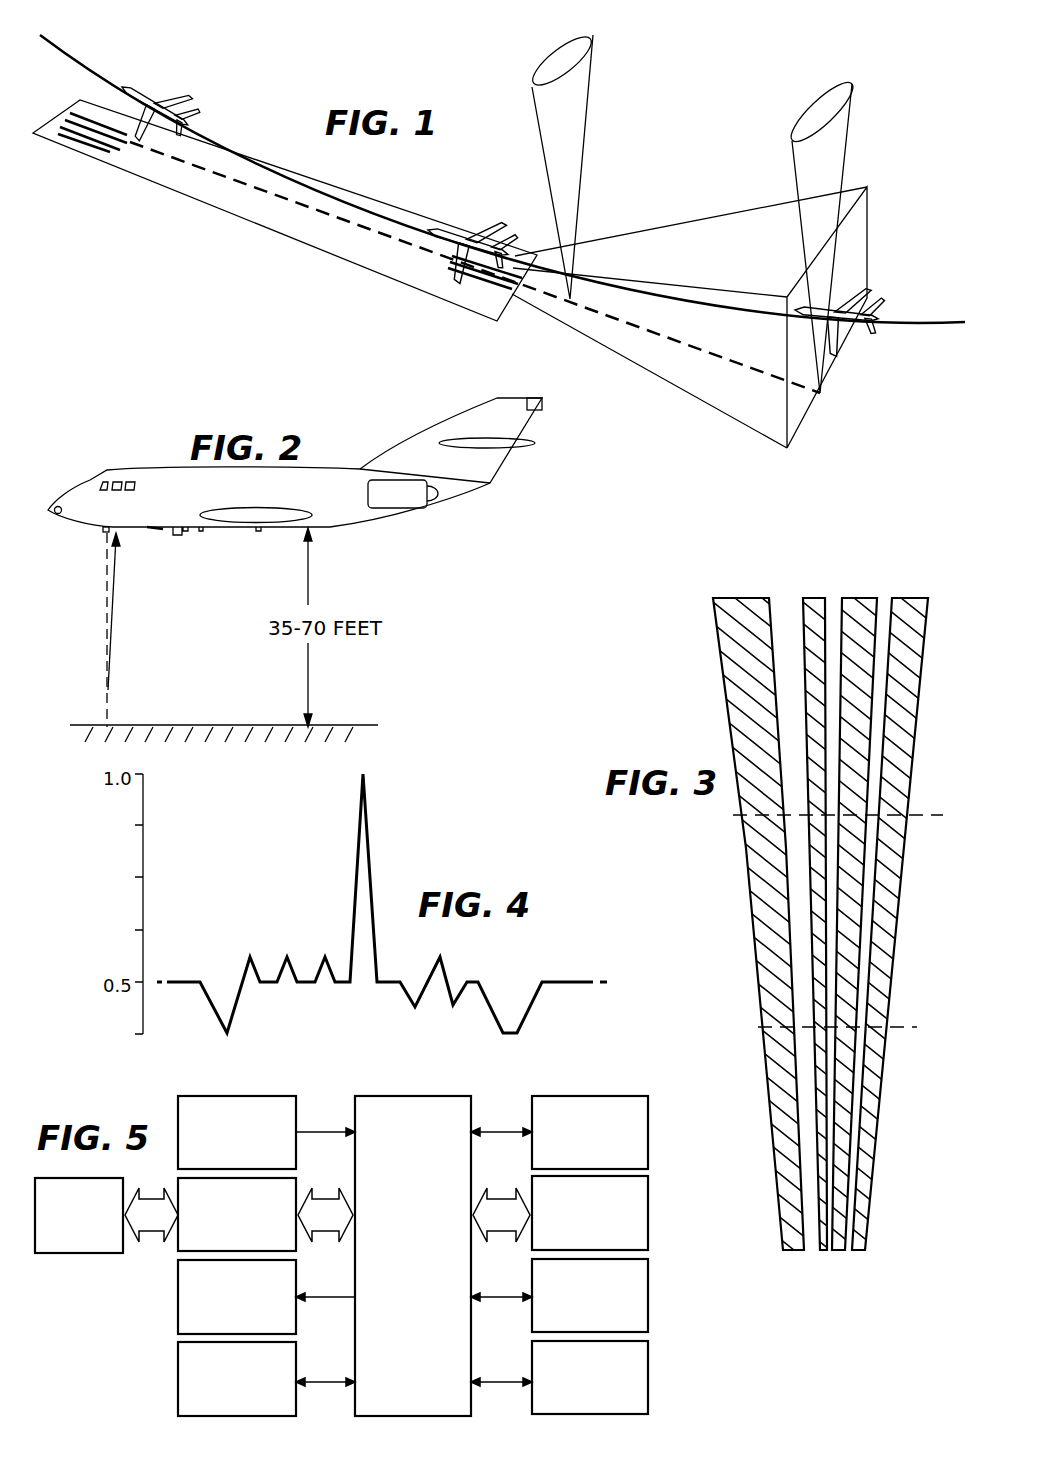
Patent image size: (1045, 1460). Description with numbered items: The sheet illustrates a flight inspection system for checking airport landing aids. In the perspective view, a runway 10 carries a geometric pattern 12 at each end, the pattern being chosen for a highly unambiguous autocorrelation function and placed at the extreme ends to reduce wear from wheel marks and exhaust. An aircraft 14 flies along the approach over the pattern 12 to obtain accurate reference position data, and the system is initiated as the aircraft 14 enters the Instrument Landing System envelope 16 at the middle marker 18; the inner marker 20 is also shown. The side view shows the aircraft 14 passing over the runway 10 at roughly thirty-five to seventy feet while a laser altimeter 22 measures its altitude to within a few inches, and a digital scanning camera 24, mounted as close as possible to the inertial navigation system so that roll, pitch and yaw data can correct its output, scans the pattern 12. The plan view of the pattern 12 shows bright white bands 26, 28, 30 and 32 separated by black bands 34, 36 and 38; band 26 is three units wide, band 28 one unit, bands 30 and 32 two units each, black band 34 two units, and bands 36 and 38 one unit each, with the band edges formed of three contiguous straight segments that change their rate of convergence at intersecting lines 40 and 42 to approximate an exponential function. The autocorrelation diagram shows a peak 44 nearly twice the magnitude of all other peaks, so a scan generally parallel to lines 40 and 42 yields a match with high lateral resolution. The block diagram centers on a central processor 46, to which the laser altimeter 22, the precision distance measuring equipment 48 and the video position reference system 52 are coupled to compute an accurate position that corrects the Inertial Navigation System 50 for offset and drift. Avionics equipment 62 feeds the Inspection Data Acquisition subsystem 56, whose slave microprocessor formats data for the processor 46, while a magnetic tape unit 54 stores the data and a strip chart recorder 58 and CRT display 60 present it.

In FIG. 1, the runway 10 is at (267, 230).
In FIG. 2, the runway 10 is at (220, 725).
In FIG. 1, the geometric pattern 12 is at (93, 140).
In FIG. 3, the geometric pattern 12 is at (722, 709).
In FIG. 1, the aircraft 14 is at (157, 90).
In FIG. 2, the aircraft 14 is at (370, 524).
In FIG. 1, the Instrument Landing System envelope 16 is at (690, 385).
In FIG. 1, the middle marker 18 is at (848, 169).
In FIG. 1, the inner marker 20 is at (586, 130).
In FIG. 2, the laser altimeter 22 is at (102, 532).
In FIG. 5, the laser altimeter 22 is at (296, 1103).
In FIG. 2, the digital scanning camera 24 is at (187, 534).
In FIG. 3, the white band 26 is at (724, 596).
In FIG. 3, the white band 28 is at (810, 600).
In FIG. 3, the white band 30 is at (863, 600).
In FIG. 3, the white band 32 is at (917, 597).
In FIG. 3, the black band 34 is at (783, 622).
In FIG. 3, the black band 36 is at (832, 622).
In FIG. 3, the black band 38 is at (882, 622).
In FIG. 3, the intersecting line 40 is at (932, 813).
In FIG. 3, the intersecting line 42 is at (903, 1027).
In FIG. 4, the peak 44 is at (358, 832).
In FIG. 5, the central processor 46 is at (466, 1110).
In FIG. 5, the precision distance measuring equipment 48 is at (642, 1109).
In FIG. 5, the Inertial Navigation System 50 is at (642, 1187).
In FIG. 5, the video position reference system 52 is at (651, 1285).
In FIG. 5, the magnetic tape unit 54 is at (651, 1362).
In FIG. 5, the Inspection Data Acquisition subsystem 56 is at (298, 1180).
In FIG. 5, the strip chart recorder 58 is at (300, 1284).
In FIG. 5, the CRT display 60 is at (298, 1366).
In FIG. 5, the avionics equipment 62 is at (124, 1184).